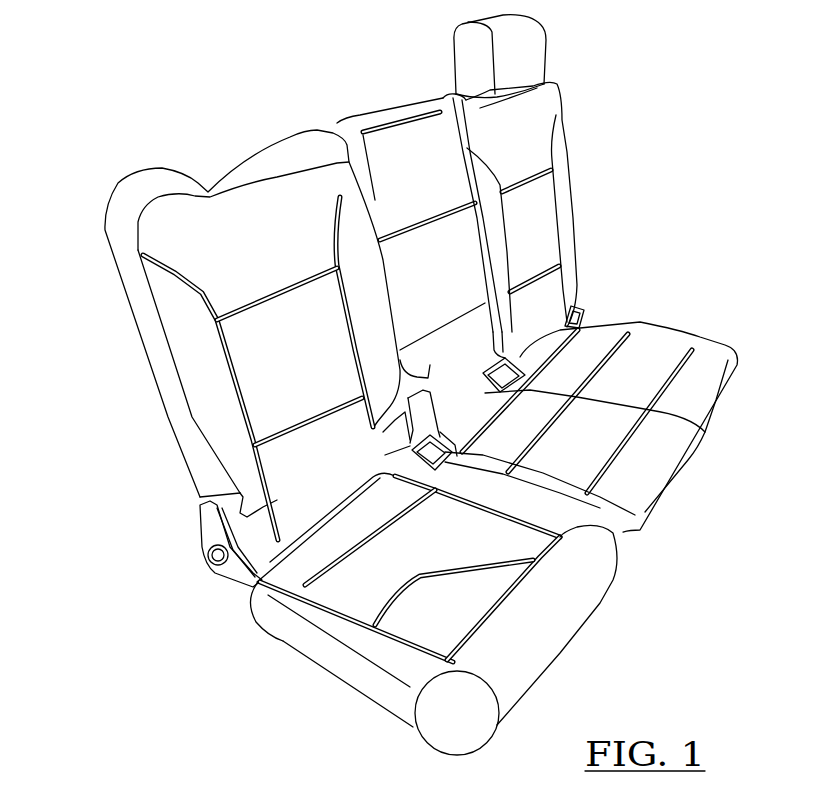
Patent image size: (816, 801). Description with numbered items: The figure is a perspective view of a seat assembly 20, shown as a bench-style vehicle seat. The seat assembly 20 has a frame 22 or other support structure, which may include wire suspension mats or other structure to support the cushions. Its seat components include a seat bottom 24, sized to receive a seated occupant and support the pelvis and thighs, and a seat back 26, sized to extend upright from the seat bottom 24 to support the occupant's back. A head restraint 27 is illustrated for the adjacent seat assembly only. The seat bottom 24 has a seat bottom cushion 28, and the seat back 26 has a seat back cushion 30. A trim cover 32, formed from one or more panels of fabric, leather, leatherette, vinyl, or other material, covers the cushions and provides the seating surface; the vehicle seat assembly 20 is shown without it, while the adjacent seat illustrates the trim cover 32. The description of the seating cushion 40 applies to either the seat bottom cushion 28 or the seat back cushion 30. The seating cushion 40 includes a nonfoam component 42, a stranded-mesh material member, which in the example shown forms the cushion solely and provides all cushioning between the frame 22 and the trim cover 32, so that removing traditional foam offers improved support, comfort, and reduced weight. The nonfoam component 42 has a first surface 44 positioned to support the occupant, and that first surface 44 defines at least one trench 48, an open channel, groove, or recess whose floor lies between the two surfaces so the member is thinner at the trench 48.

The seat assembly 20 is at (88, 136).
The frame 22 is at (195, 523).
The seat bottom 24 is at (577, 566).
The seat back 26 is at (220, 158).
The head restraint 27 is at (531, 63).
The seat bottom cushion 28 is at (494, 575).
The seat back cushion 30 is at (318, 261).
The trim cover 32 is at (667, 352).
The seating cushion 40 is at (326, 457).
The nonfoam component 42 is at (326, 457).
The first surface 44 is at (500, 653).
The trench 48 is at (280, 295).